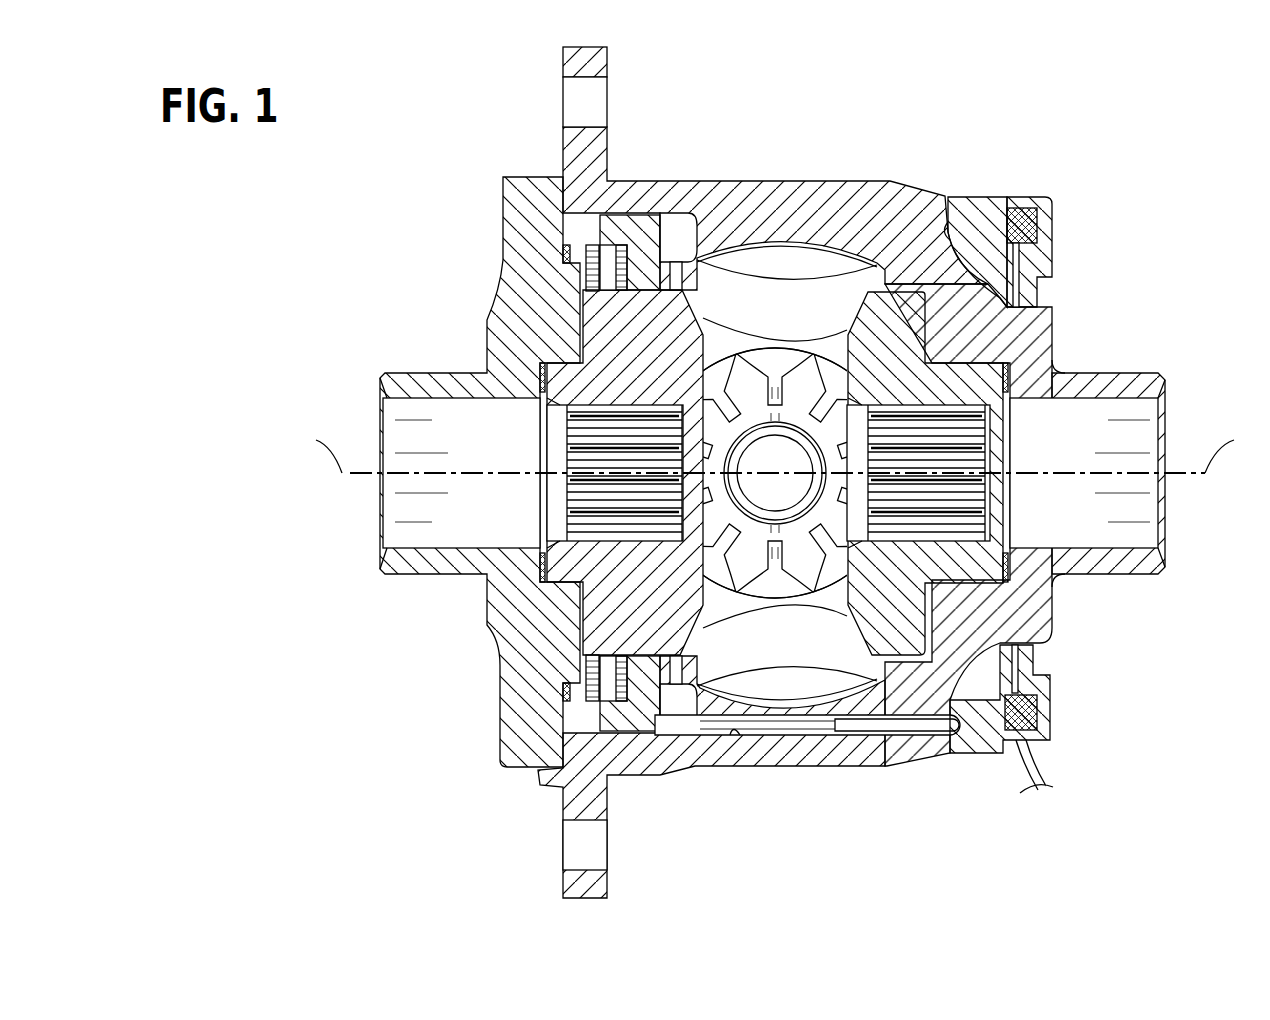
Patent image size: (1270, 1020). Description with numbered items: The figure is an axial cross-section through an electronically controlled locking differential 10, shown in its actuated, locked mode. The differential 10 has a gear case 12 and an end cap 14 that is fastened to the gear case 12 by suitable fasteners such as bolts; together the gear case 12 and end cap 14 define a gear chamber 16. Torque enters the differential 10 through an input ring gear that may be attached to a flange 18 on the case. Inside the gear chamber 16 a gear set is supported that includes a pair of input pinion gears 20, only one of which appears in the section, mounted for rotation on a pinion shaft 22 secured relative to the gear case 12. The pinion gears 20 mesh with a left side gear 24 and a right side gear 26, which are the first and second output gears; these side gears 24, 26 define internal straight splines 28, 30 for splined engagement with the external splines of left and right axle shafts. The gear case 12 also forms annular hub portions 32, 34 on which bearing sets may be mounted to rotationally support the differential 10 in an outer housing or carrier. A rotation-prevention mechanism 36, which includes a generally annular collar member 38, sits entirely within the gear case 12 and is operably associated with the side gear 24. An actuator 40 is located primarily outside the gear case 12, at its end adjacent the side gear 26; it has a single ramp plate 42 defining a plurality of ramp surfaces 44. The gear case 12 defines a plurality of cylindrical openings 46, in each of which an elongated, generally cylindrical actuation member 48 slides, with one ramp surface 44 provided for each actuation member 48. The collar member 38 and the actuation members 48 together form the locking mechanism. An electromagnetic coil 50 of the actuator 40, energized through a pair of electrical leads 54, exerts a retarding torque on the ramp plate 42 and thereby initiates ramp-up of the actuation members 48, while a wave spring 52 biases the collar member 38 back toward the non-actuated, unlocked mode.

The differential 10 is at (470, 171).
The gear case 12 is at (755, 190).
The end cap 14 is at (520, 248).
The gear chamber 16 is at (780, 298).
The flange 18 is at (576, 146).
The input pinion gears 20 is at (797, 600).
The pinion shaft 22 is at (762, 470).
The left side gear 24 is at (650, 318).
The right side gear 26 is at (922, 324).
The internal straight splines 28 is at (567, 455).
The internal straight splines 30 is at (1005, 440).
The annular hub portion 32 is at (446, 372).
The annular hub portion 34 is at (1113, 576).
The rotation-prevention mechanism 36 is at (669, 232).
The collar member 38 is at (612, 711).
The actuator 40 is at (1062, 213).
The ramp plate 42 is at (980, 195).
The ramp surfaces 44 is at (952, 222).
The cylindrical openings 46 is at (734, 727).
The actuation member 48 is at (762, 726).
The electromagnetic coil 50 is at (1030, 709).
The wave spring 52 is at (563, 258).
The electrical leads 54 is at (1042, 773).